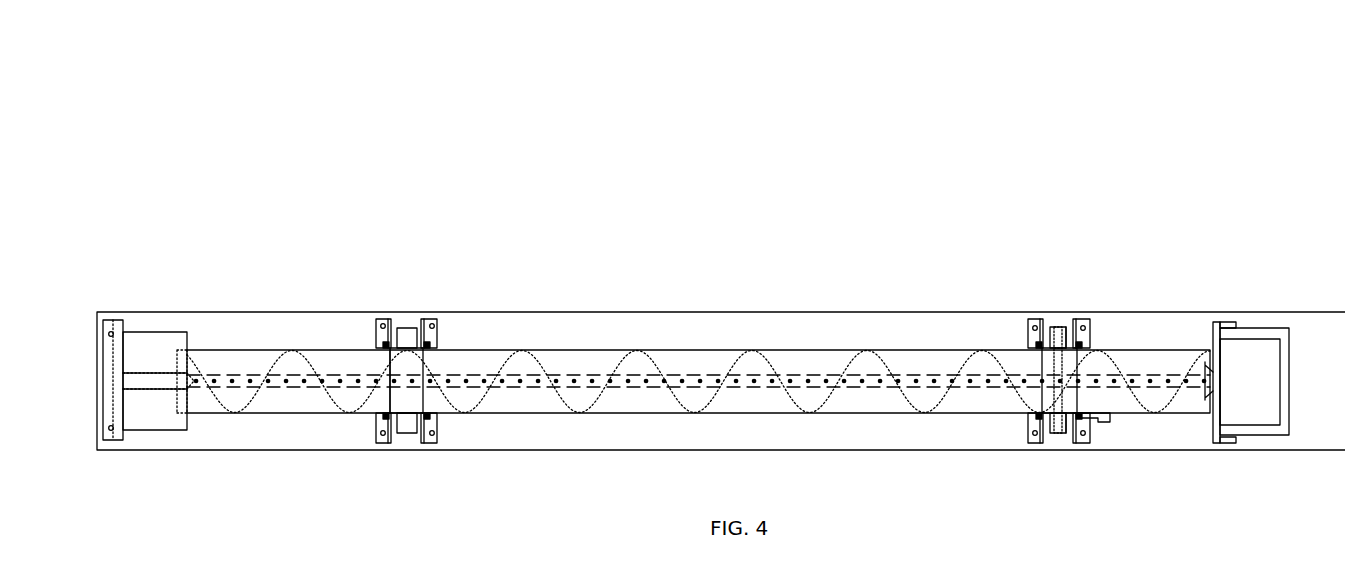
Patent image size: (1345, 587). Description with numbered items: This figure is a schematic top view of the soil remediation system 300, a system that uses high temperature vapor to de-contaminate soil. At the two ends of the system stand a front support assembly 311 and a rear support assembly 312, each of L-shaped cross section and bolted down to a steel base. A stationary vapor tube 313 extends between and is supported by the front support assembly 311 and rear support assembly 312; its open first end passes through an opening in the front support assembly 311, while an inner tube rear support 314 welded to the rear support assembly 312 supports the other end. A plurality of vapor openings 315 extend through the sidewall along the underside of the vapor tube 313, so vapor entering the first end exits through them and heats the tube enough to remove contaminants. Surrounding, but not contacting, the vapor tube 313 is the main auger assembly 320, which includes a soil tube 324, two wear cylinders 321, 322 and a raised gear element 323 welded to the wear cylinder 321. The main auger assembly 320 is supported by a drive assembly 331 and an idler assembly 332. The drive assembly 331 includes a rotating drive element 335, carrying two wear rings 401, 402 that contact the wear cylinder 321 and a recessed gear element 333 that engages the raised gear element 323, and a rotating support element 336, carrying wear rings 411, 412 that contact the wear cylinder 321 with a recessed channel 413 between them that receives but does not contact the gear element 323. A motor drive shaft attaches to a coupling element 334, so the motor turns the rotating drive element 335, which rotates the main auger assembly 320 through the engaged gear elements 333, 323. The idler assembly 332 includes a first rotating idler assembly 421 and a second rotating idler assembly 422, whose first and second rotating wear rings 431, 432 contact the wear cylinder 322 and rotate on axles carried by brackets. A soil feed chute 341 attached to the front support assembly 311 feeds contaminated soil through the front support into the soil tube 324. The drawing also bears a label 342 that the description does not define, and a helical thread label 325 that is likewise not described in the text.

The soil remediation system 300 is at (240, 80).
The front support assembly 311 is at (1220, 320).
The rear support assembly 312 is at (120, 320).
The vapor tube 313 is at (810, 373).
The inner tube rear support 314 is at (142, 375).
The vapor openings 315 is at (643, 386).
The main auger assembly 320 is at (324, 416).
The wear cylinder 321 is at (1047, 370).
The wear cylinder 322 is at (402, 368).
The gear element 323 is at (1062, 373).
The soil tube 324 is at (565, 350).
The helical thread 325 is at (733, 360).
The drive assembly 331 is at (1024, 430).
The idler assembly 332 is at (442, 428).
The gear element 333 is at (1061, 462).
The coupling element 334 is at (1108, 418).
The rotating drive element 335 is at (1025, 446).
The rotating support element 336 is at (1025, 324).
The soil feed chute 341 is at (1248, 432).
The bearing block 342 is at (152, 430).
The wear ring 401 is at (1063, 427).
The wear ring 402 is at (1053, 420).
The wear ring 411 is at (1063, 348).
The wear ring 412 is at (1053, 350).
The recessed channel 413 is at (1058, 480).
The first rotating idler assembly 421 is at (427, 450).
The second rotating idler assembly 422 is at (386, 316).
The first rotating wear ring 431 is at (407, 427).
The second rotating wear ring 432 is at (408, 335).